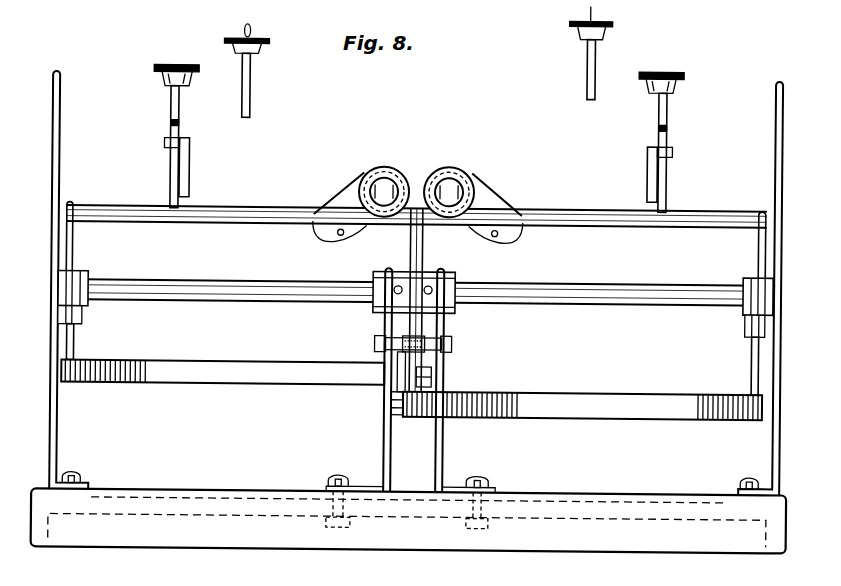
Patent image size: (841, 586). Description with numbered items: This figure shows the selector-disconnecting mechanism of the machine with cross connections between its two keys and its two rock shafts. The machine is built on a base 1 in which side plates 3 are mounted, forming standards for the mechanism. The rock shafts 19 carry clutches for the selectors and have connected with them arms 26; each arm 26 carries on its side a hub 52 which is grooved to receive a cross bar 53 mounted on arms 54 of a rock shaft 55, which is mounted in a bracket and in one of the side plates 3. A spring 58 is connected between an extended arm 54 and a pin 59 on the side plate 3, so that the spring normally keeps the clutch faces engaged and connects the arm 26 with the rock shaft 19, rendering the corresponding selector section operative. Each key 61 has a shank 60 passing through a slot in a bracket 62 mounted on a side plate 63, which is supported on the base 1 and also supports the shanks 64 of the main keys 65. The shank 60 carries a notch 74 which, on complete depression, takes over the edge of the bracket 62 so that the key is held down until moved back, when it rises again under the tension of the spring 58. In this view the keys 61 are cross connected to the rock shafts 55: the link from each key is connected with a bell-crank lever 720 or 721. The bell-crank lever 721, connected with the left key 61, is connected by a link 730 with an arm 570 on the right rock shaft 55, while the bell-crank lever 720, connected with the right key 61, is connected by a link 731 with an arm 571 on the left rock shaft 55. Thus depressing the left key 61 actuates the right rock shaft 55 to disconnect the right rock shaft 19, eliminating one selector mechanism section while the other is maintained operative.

The base 1 is at (563, 503).
The side plate 3 is at (53, 138).
The rock shaft 19 is at (441, 184).
The arm 26 is at (333, 200).
The hub 52 is at (370, 176).
The cross bar 53 is at (213, 226).
The arm 54 is at (72, 246).
The rock shaft 55 is at (217, 281).
The spring 58 is at (412, 373).
The pin 59 is at (423, 336).
The shank 60 is at (177, 103).
The key 61 is at (173, 67).
The bracket 62 is at (164, 145).
The side plate 63 is at (188, 171).
The shank 64 is at (248, 93).
The main key 65 is at (232, 40).
The notch 74 is at (170, 126).
The arm 570 is at (433, 372).
The arm 571 is at (403, 406).
The bell-crank lever 720 is at (75, 338).
The bell-crank lever 721 is at (753, 365).
The link 730 is at (212, 369).
The link 731 is at (563, 398).